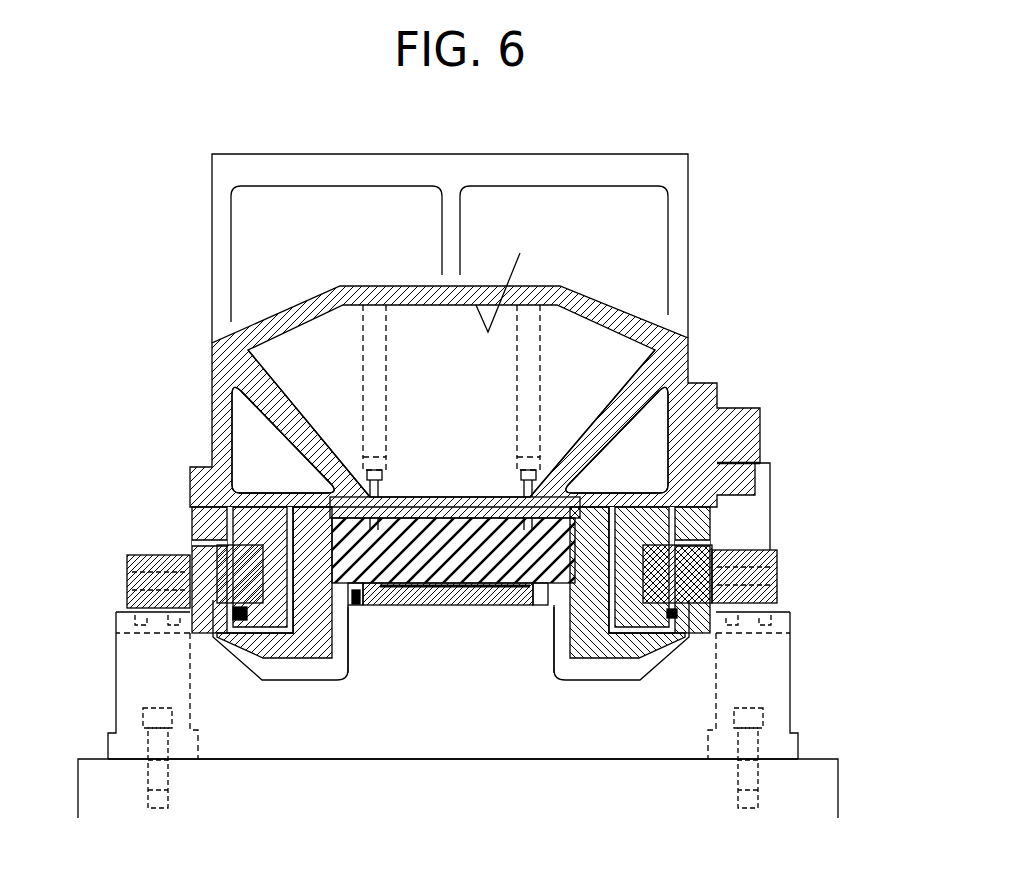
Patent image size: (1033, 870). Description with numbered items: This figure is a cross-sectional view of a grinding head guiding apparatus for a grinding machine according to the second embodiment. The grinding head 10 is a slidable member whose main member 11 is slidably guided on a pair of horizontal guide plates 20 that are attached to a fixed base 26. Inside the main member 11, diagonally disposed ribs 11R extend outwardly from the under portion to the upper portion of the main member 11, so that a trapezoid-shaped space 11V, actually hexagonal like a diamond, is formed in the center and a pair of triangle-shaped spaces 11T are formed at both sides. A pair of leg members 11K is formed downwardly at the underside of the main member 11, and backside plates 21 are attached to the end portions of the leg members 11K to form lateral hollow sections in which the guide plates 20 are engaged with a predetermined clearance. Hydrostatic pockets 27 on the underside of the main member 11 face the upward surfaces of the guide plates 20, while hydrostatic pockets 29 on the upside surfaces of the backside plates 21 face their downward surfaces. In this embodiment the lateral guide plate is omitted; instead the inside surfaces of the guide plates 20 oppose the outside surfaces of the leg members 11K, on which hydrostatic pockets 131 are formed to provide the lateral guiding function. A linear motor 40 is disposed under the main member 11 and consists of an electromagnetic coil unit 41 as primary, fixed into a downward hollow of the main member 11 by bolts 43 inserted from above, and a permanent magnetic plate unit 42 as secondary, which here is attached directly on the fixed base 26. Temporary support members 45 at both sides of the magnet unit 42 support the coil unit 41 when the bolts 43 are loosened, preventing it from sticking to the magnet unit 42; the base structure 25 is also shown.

The grinding head 10 is at (195, 207).
The main member 11 is at (263, 300).
The trapezoid-shaped space 11V is at (518, 279).
The triangle-shaped spaces 11T is at (250, 417).
The ribs 11R is at (287, 417).
The leg members 11K is at (313, 575).
The linear motor 40 is at (405, 515).
The electromagnetic coil unit 41 is at (450, 538).
The permanent magnetic plate unit 42 is at (432, 595).
The bolts 43 is at (527, 462).
The hydrostatic pockets 27 is at (230, 540).
The backside plates 21 is at (290, 653).
The hydrostatic pockets 131 is at (267, 577).
The horizontal guide plates 20 is at (190, 595).
The hydrostatic pockets 29 is at (243, 612).
The temporary support members 45 is at (356, 600).
The base 25 is at (822, 780).
The fixed base 26 is at (442, 740).